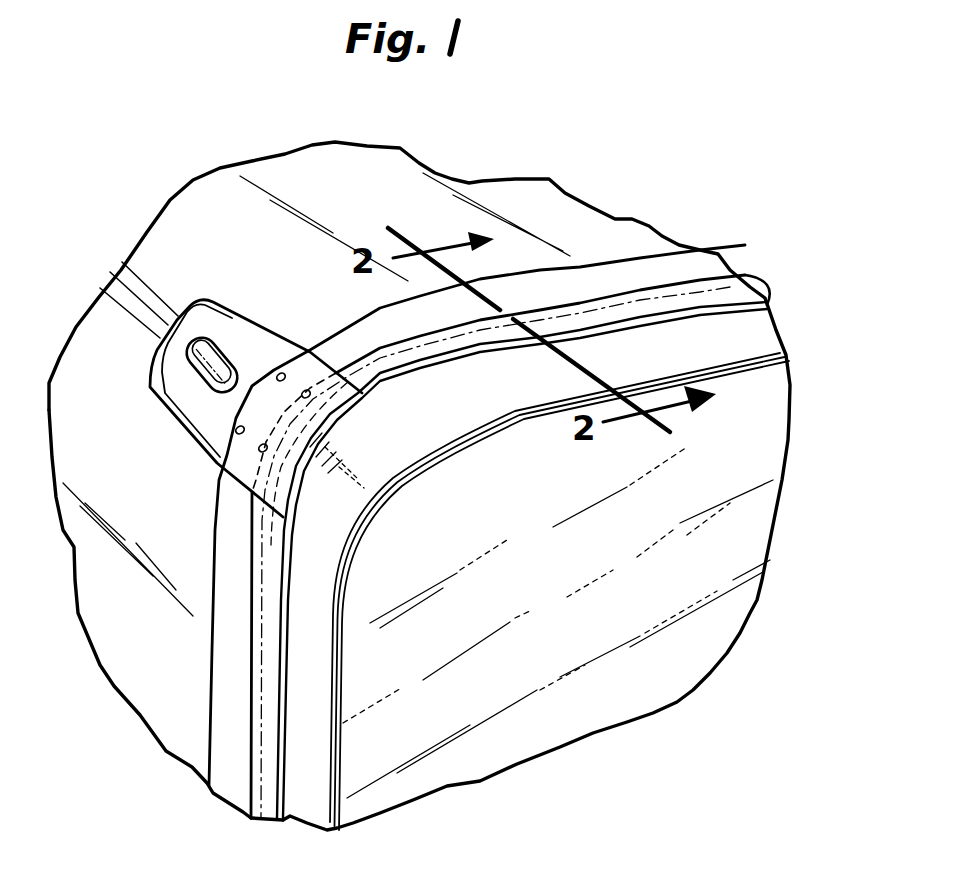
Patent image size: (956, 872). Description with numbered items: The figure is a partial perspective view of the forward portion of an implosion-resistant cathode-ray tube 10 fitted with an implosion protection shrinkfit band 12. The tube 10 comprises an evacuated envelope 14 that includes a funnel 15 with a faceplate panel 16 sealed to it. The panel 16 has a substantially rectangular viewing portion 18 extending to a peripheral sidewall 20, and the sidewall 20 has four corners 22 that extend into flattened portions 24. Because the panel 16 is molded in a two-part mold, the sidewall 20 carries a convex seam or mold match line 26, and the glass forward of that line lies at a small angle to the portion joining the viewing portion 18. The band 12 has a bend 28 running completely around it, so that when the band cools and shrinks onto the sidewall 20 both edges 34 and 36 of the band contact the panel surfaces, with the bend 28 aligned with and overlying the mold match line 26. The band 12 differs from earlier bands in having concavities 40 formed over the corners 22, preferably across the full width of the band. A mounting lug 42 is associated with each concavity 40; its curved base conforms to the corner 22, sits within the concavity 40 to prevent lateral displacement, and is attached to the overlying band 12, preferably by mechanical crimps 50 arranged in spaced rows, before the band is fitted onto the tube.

The cathode-ray tube 10 is at (614, 176).
The shrinkfit band 12 is at (714, 264).
The evacuated envelope 14 is at (348, 136).
The funnel 15 is at (244, 241).
The faceplate panel 16 is at (735, 459).
The viewing portion 18 is at (735, 523).
The peripheral sidewall 20 is at (304, 644).
The corners 22 is at (333, 510).
The flattened portions 24 is at (302, 739).
The mold match line 26 is at (724, 283).
The bend 28 is at (745, 274).
The edge of band 34 is at (768, 312).
The edge of band 36 is at (689, 252).
The concavities 40 is at (317, 463).
The mounting lug 42 is at (286, 285).
The mechanical crimp 50 is at (286, 374).